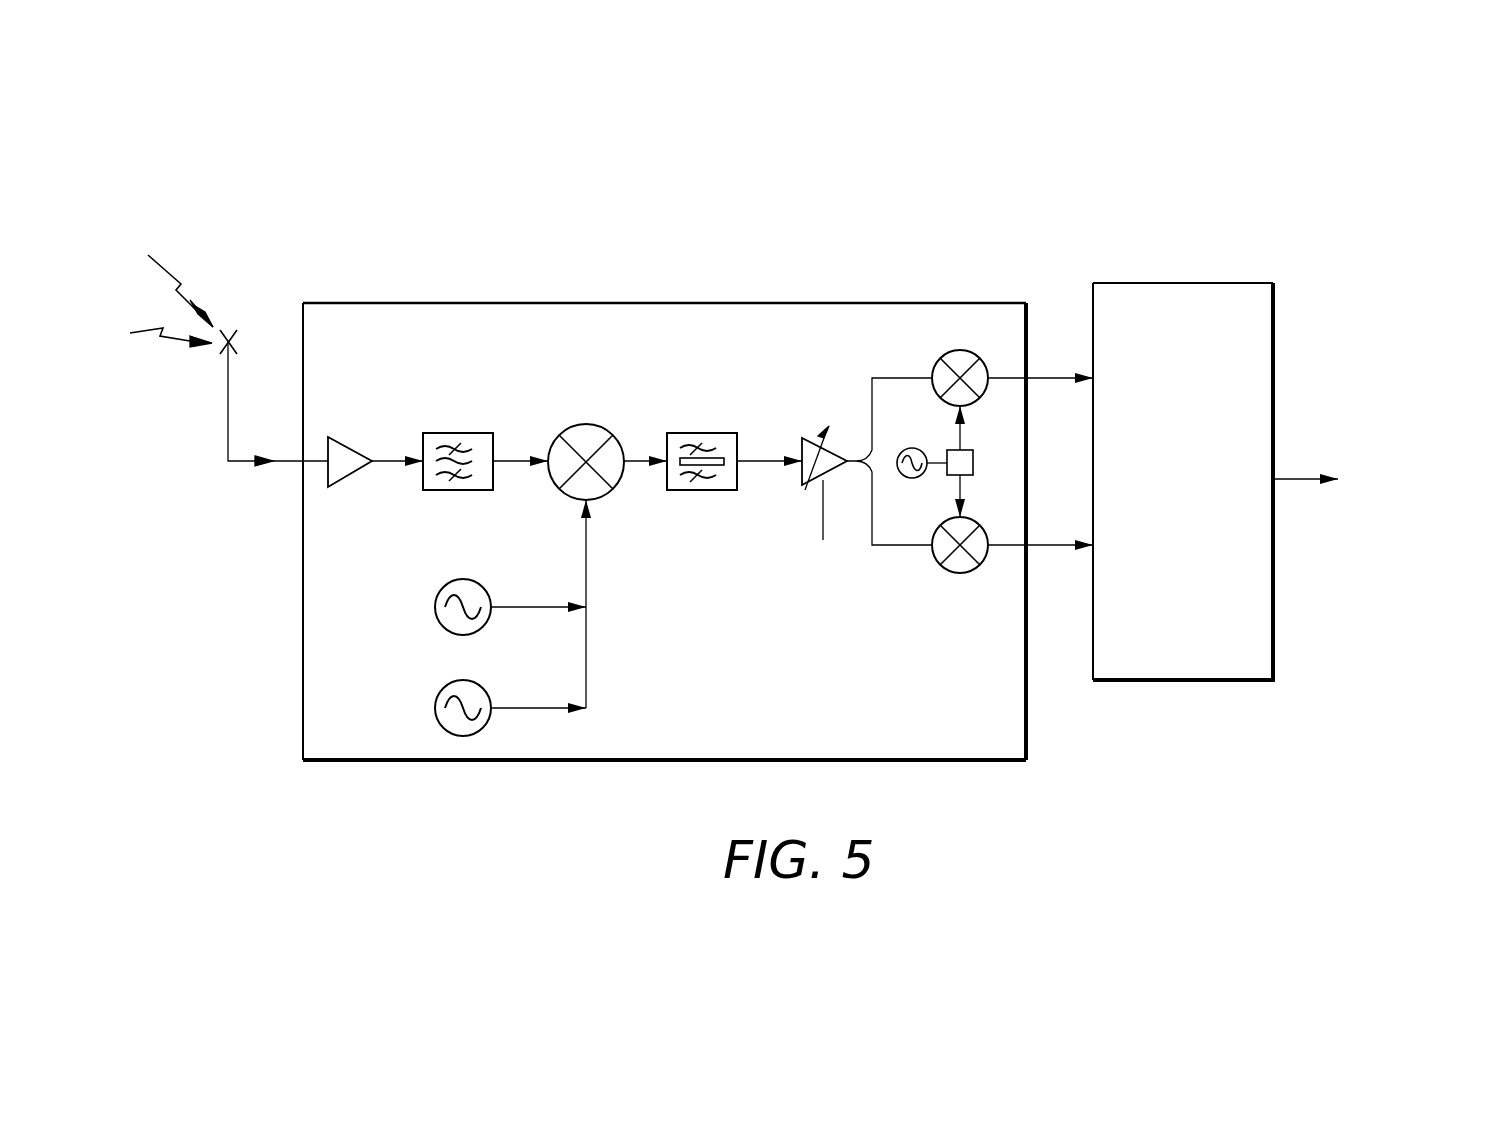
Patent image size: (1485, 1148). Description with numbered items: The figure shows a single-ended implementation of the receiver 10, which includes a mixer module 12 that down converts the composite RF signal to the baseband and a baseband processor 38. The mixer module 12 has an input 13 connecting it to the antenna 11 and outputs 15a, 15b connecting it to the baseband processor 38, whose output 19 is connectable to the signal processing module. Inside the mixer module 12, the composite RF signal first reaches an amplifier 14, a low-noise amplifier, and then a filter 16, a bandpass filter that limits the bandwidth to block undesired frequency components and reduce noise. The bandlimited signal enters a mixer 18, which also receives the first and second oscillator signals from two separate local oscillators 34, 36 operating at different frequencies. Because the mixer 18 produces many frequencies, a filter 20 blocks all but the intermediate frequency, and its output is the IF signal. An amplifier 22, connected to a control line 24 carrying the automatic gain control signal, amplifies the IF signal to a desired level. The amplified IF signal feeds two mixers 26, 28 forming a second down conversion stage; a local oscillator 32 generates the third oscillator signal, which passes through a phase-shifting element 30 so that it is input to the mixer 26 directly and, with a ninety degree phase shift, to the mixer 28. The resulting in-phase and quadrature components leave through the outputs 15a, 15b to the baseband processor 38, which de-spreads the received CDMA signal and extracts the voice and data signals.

The receiver 10 is at (866, 172).
The antenna 11 is at (223, 352).
The mixer module 12 is at (680, 303).
The input 13 is at (300, 468).
The amplifier 14 is at (360, 436).
The filter 16 is at (466, 432).
The mixer 18 is at (590, 424).
The filter 20 is at (710, 433).
The amplifier 22 is at (816, 438).
The control line 24 is at (822, 500).
The mixer 26 is at (955, 350).
The mixer 28 is at (958, 574).
The phase splitter 30 is at (973, 452).
The local oscillator 32 is at (918, 447).
The local oscillator 34 is at (460, 580).
The local oscillator 36 is at (460, 681).
The baseband processor 38 is at (1160, 282).
The output 15a is at (1028, 378).
The output 15b is at (1028, 545).
The output 19 is at (1337, 476).